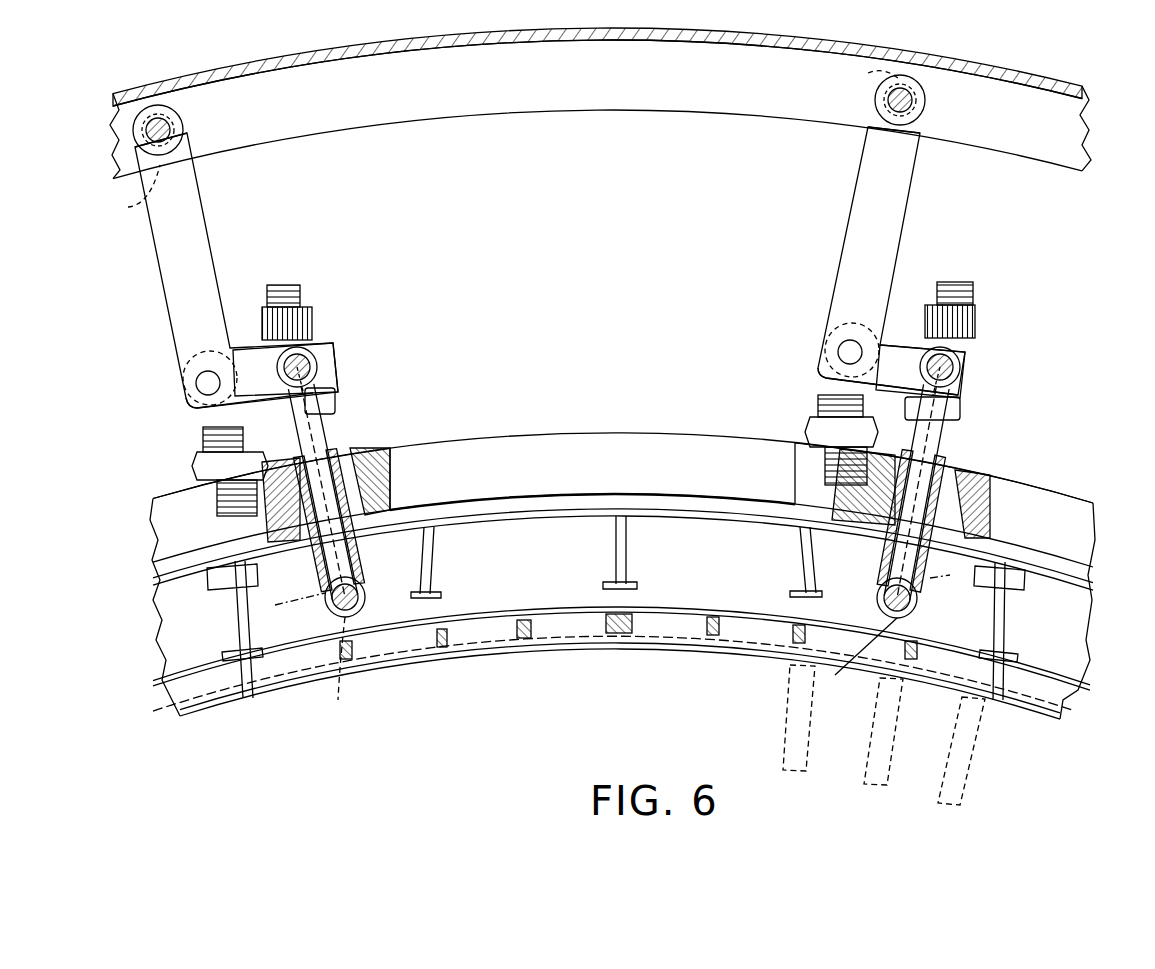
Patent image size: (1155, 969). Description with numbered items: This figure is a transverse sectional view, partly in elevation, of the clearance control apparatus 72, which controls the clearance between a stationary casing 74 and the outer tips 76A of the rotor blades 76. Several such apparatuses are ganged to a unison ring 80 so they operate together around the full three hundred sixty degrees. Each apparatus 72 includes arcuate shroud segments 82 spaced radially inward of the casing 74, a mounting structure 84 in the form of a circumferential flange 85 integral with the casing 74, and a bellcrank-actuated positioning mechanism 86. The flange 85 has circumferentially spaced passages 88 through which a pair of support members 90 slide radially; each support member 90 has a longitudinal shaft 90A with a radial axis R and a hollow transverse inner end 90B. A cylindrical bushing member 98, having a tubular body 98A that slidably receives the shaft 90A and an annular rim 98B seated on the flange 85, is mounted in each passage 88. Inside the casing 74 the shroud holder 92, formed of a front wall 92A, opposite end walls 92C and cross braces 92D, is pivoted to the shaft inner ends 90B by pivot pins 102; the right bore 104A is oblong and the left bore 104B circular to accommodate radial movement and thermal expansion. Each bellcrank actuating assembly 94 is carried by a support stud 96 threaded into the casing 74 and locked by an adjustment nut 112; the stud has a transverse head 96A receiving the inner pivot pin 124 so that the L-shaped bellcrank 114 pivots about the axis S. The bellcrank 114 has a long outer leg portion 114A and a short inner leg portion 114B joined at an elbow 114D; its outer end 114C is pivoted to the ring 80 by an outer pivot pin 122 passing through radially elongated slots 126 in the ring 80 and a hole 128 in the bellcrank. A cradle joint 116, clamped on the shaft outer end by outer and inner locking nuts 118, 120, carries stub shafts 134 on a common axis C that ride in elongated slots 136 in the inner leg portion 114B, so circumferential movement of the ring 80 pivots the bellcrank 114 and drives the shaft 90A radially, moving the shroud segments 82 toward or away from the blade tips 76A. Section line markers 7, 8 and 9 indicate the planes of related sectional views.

The clearance control apparatus 72 is at (1014, 260).
The stationary casing 74 is at (477, 434).
The blades 76 is at (808, 770).
The outer tips 76A is at (792, 677).
The unison ring 80 is at (720, 35).
The shroud segments 82 is at (500, 657).
The mounting structure 84 is at (630, 432).
The circumferential flange 85 is at (569, 433).
The shroud segment positioning mechanism 86 is at (665, 206).
The passages 88 is at (372, 502).
The support members 90 is at (365, 462).
The longitudinal shaft 90A is at (305, 542).
The transverse end 90B is at (420, 642).
The shroud holder 92 is at (580, 508).
The front wall 92A is at (522, 527).
The opposite end walls 92C is at (255, 632).
The cross braces 92D is at (440, 564).
The actuating assemblies 94 is at (236, 285).
The support stud 96 is at (200, 442).
The transverse head 96A is at (190, 340).
The bushing member 98 is at (376, 487).
The tubular body 98A is at (365, 532).
The annular rim 98B is at (345, 442).
The pivot pins 102 is at (340, 618).
The right bore 104A is at (875, 590).
The left bore 104B is at (357, 587).
The adjustment nut 112 is at (200, 482).
The bellcrank 114 is at (212, 249).
The outer leg portion 114A is at (205, 206).
The inner leg portion 114B is at (318, 325).
The outer end 114C is at (925, 105).
The elbow 114D is at (195, 411).
The cradle joint 116 is at (333, 378).
The outer locking nut 118 is at (305, 290).
The inner locking nut 120 is at (338, 395).
The outer pivot pin 122 is at (175, 117).
The inner pivot pin 124 is at (196, 385).
The radially elongated slots 126 is at (492, 139).
The hole 128 is at (185, 145).
The stub shafts 134 is at (302, 366).
The elongated slots 136 is at (290, 385).
The pivotal axis S is at (198, 378).
The common axis C is at (322, 372).
The longitudinal axis R is at (614, 591).
The section line 7- 7 is at (105, 655).
The section line 8- 8 is at (910, 12).
The section line 9- 9 is at (768, 345).